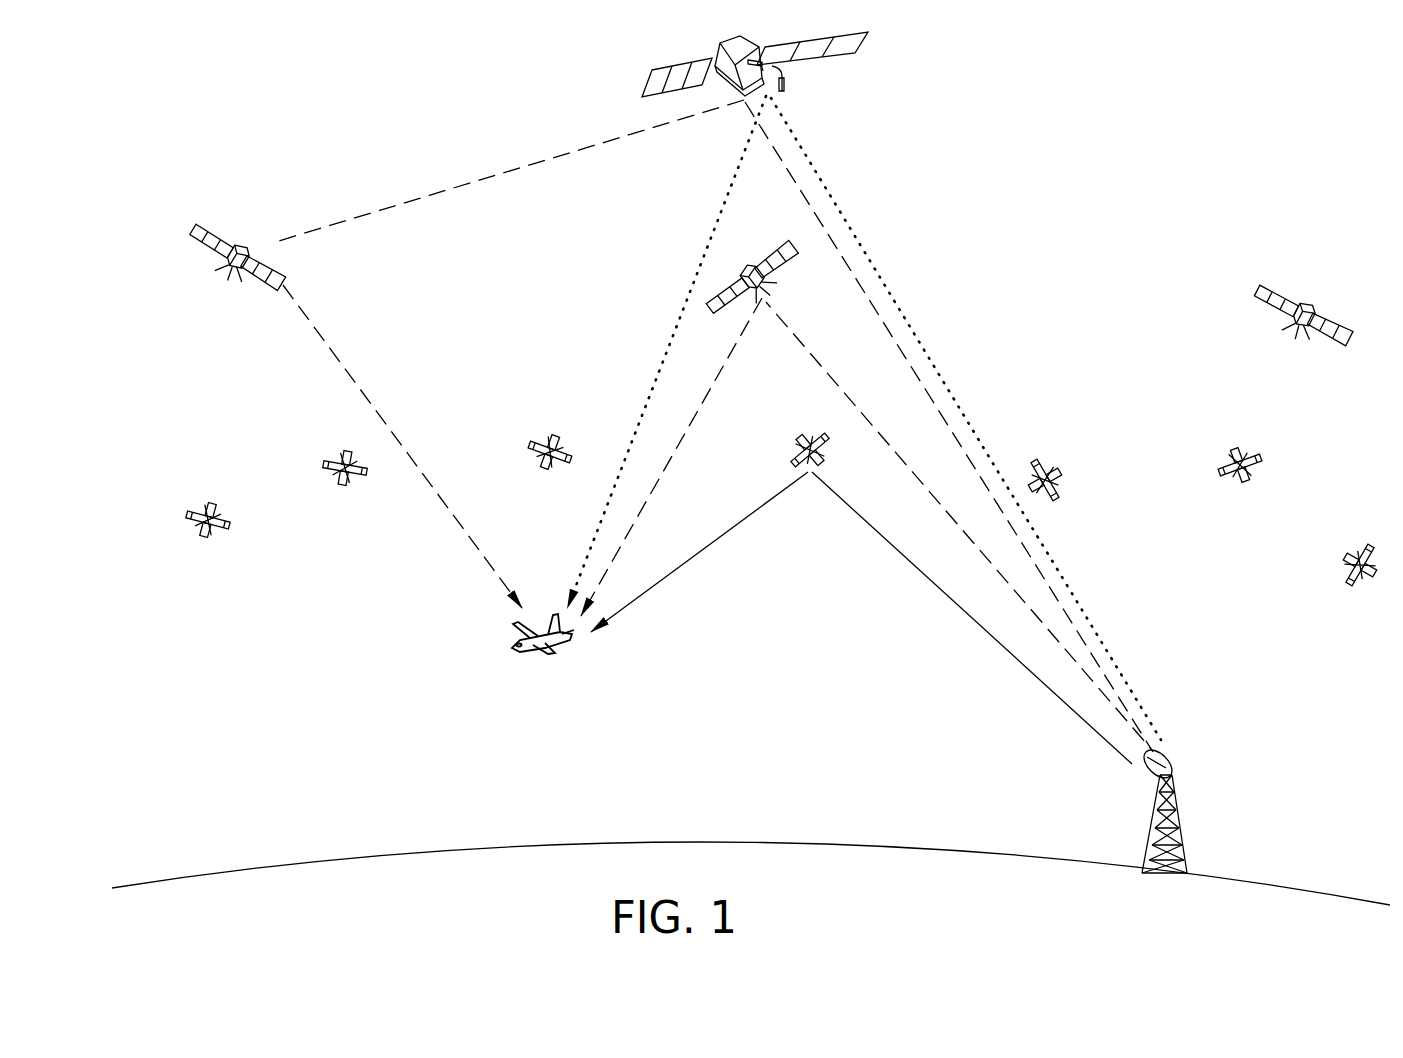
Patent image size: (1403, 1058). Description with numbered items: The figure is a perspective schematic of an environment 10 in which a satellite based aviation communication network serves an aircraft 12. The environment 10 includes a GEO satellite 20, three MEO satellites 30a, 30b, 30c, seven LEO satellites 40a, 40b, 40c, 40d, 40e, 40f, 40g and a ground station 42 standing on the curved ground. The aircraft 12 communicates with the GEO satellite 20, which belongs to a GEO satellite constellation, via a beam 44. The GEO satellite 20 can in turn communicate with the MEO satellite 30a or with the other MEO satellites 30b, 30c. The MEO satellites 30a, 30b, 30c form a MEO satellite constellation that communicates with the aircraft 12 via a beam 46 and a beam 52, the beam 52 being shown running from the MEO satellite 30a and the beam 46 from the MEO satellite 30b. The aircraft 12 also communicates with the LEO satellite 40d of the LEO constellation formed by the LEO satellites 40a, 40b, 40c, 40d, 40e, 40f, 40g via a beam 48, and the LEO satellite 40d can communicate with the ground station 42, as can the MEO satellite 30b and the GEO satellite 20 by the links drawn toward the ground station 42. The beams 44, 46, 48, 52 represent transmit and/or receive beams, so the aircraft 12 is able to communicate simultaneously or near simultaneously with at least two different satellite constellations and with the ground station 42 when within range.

The environment 10 is at (1150, 72).
The aircraft 12 is at (526, 656).
The GEO satellite 20 is at (682, 74).
The MEO satellite 30a is at (210, 233).
The MEO satellite 30b is at (772, 258).
The MEO satellite 30c is at (1276, 292).
The LEO satellite 40a is at (194, 500).
The LEO satellite 40b is at (332, 455).
The LEO satellite 40c is at (542, 432).
The LEO satellite 40d is at (815, 436).
The LEO satellite 40e is at (1042, 460).
The LEO satellite 40f is at (1252, 447).
The LEO satellite 40g is at (1358, 543).
The ground station 42 is at (1164, 748).
The beam 44 is at (675, 325).
The beam 46 is at (738, 355).
The beam 48 is at (630, 606).
The beam 52 is at (386, 400).